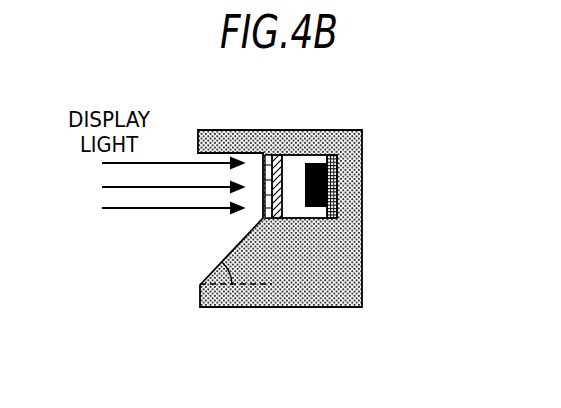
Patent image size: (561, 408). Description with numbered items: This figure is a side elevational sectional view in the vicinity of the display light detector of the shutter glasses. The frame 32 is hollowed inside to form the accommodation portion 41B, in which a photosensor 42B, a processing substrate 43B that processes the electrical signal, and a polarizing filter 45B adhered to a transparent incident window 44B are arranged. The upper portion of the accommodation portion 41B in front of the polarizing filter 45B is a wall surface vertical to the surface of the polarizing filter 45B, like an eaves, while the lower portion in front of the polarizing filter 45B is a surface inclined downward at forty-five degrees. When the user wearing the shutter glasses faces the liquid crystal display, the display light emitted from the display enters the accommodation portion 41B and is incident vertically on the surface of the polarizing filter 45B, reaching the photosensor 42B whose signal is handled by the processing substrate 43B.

The accommodation portion 41B is at (203, 247).
The frame 32 is at (340, 268).
The photosensor 42B is at (333, 175).
The processing substrate 43B is at (333, 218).
The transparent incident window 44B is at (283, 157).
The polarizing filter 45B is at (258, 157).